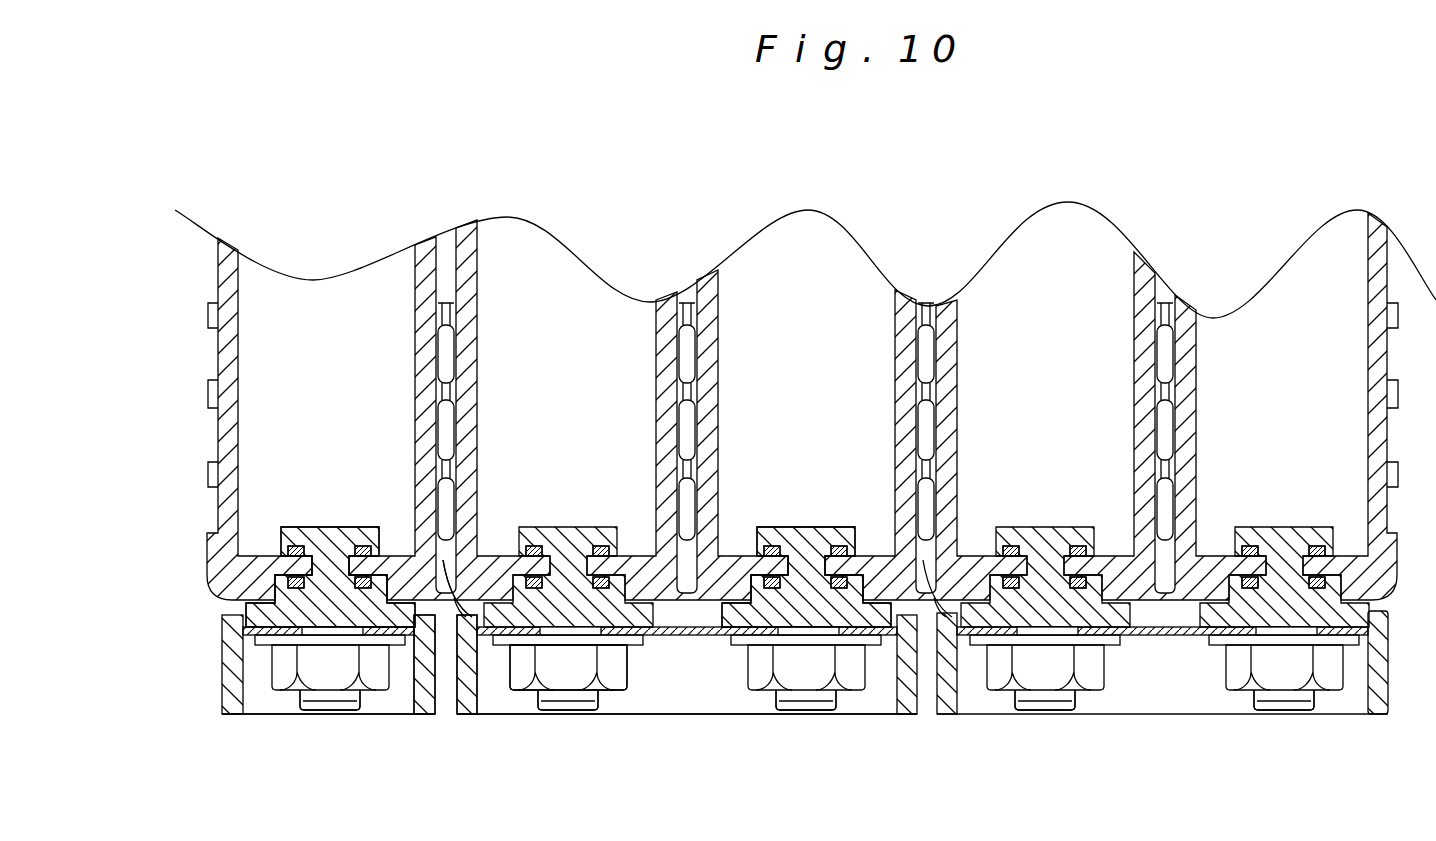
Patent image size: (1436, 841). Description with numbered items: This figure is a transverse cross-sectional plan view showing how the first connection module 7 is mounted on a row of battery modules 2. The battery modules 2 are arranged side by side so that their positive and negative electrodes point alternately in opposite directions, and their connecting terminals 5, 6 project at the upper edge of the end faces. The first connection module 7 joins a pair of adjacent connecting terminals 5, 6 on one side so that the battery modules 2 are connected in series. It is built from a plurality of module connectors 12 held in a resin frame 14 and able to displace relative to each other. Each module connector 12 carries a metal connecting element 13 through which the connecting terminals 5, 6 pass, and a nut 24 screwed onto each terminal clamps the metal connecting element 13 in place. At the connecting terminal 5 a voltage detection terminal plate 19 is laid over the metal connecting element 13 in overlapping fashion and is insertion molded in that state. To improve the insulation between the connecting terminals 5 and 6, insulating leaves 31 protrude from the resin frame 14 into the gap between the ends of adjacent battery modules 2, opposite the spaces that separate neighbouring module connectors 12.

The battery module 2 is at (338, 312).
The connecting terminal 5 is at (337, 705).
The connecting terminal 6 is at (571, 698).
The first connection module 7 is at (228, 735).
The module connector 12 is at (270, 714).
The metal connecting element 13 is at (228, 676).
The resin frame 14 is at (423, 706).
The voltage detection terminal plate 19 is at (228, 640).
The nut 24 is at (551, 668).
The insulating leaf 31 is at (430, 590).